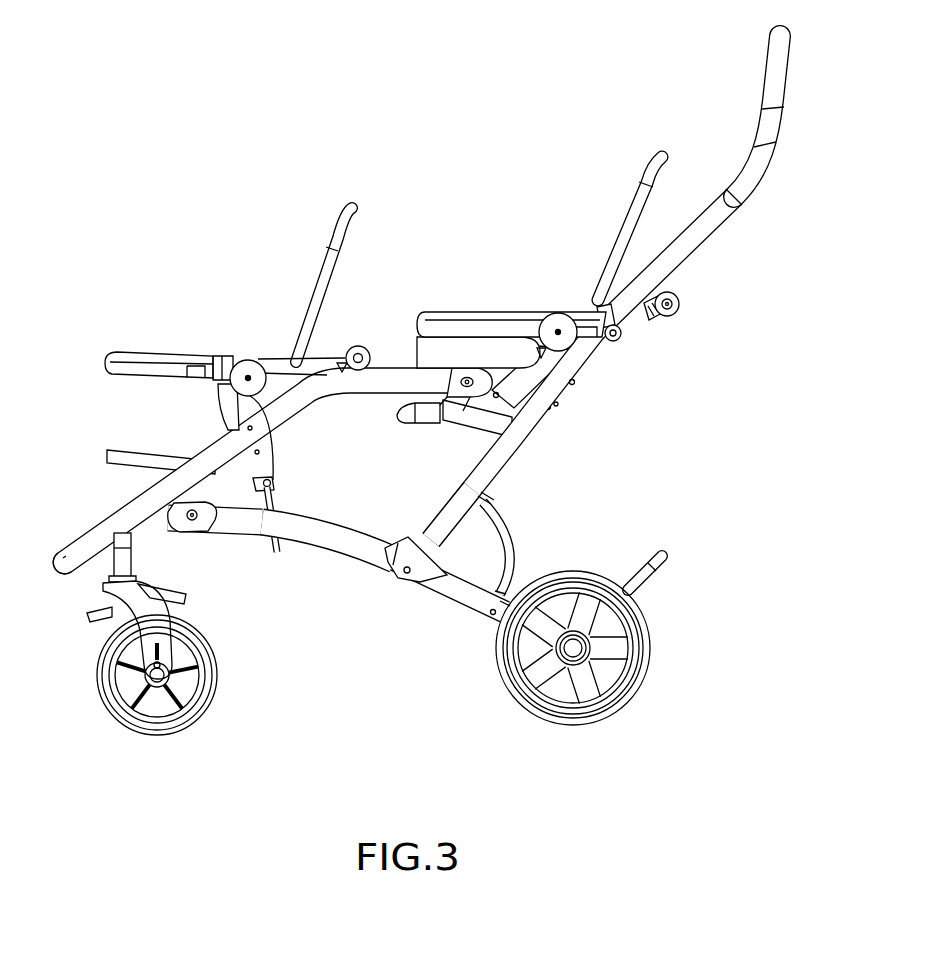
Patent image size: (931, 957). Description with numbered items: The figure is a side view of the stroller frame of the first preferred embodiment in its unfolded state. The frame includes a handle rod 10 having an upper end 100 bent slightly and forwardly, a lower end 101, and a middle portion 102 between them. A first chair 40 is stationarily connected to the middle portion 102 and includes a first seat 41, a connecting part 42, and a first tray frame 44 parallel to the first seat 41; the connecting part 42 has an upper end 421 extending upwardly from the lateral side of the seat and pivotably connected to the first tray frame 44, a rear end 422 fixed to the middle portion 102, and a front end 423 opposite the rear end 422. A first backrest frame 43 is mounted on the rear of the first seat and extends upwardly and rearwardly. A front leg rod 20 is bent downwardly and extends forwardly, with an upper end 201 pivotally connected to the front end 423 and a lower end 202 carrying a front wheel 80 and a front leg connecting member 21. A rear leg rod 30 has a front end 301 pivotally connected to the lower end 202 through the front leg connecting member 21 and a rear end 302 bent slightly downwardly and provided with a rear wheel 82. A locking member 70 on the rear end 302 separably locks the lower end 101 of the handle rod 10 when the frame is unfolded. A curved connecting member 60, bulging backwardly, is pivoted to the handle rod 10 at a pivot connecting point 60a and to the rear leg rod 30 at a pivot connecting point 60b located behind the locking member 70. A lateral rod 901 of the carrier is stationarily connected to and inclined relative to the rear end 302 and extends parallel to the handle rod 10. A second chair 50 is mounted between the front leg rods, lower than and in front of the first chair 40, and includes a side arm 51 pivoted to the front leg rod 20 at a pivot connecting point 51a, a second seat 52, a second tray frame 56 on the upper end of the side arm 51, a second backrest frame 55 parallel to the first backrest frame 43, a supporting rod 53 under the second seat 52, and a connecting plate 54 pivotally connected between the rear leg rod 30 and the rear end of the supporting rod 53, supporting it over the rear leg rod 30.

The upper end 100 is at (782, 43).
The first backrest frame 43 is at (619, 242).
The second backrest frame 55 is at (312, 283).
The handle rod 10 is at (592, 360).
The lower end 101 is at (447, 516).
The middle portion 102 is at (628, 318).
The front leg rod 20 is at (401, 385).
The upper end 201 is at (462, 380).
The lower end 202 is at (66, 568).
The first tray frame 44 is at (471, 318).
The upper end 421 is at (543, 352).
The first chair 40 is at (556, 300).
The connecting part 42 is at (517, 383).
The rear end 422 is at (558, 372).
The front end 423 is at (498, 392).
The first seat 41 is at (455, 415).
The second chair 50 is at (250, 352).
The side arm 51 is at (238, 408).
The pivot connecting point 51a is at (248, 428).
The second seat 52 is at (133, 460).
The second tray frame 56 is at (143, 354).
The front end 301 is at (174, 512).
The front leg connecting member 21 is at (165, 520).
The front wheel 80 is at (125, 695).
The supporting rod 53 is at (253, 482).
The connecting plate 54 is at (273, 497).
The rear leg rod 30 is at (338, 542).
The locking member 70 is at (413, 562).
The rear end 302 is at (452, 595).
The pivot connecting point 60b is at (493, 614).
The connecting member 60 is at (520, 540).
The pivot connecting point 60a is at (478, 488).
The lateral rod 901 is at (632, 588).
The rear wheel 82 is at (620, 656).